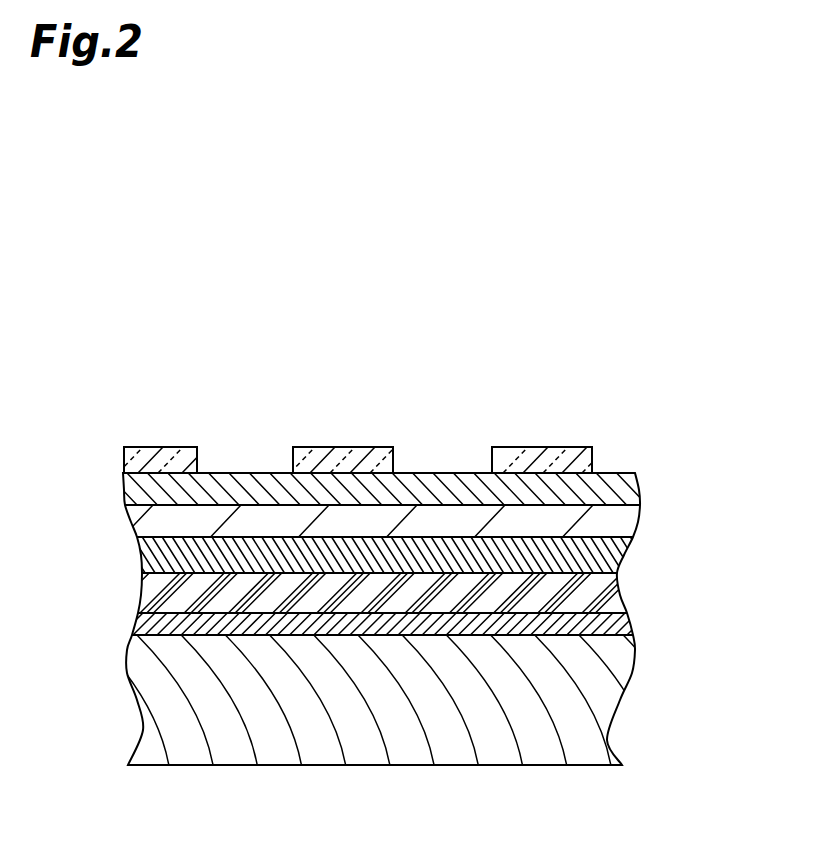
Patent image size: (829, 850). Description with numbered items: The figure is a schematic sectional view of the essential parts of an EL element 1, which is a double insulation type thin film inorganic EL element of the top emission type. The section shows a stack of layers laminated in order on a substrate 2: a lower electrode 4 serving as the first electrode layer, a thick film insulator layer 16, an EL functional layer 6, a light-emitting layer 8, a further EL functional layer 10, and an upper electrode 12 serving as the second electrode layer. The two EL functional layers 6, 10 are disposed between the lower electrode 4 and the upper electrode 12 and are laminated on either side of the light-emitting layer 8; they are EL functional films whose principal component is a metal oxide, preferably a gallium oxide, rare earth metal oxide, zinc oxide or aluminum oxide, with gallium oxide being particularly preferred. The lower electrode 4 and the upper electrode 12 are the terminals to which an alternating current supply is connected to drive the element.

The EL element 1 is at (672, 395).
The substrate 2 is at (607, 680).
The lower electrode 4 is at (605, 630).
The EL functional layer 6 is at (603, 565).
The light-emitting layer 8 is at (622, 530).
The EL functional layer 10 is at (628, 495).
The upper electrode 12 is at (175, 450).
The thick film insulator layer 16 is at (588, 595).